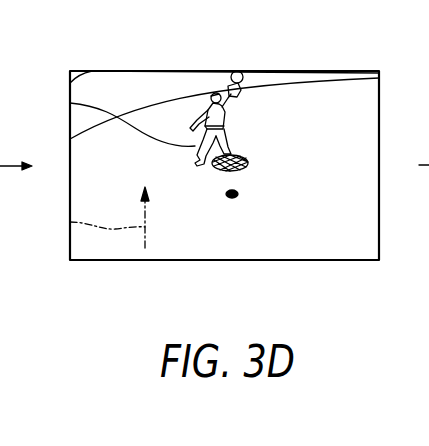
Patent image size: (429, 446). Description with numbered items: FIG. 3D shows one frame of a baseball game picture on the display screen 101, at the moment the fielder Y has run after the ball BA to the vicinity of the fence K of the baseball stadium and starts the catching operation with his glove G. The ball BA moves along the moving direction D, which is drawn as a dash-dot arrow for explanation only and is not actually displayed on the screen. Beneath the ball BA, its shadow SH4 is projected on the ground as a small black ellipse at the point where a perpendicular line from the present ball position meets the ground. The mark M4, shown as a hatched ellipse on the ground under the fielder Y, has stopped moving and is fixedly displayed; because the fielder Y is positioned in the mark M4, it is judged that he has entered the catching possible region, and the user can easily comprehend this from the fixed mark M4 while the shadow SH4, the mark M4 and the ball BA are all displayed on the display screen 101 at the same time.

The display screen 101 is at (336, 71).
The fence K is at (78, 71).
The glove G is at (198, 71).
The fielder Y is at (70, 103).
The moving direction D is at (70, 222).
The ball BA is at (238, 70).
The mark M4 is at (233, 153).
The shadow SH4 is at (233, 199).